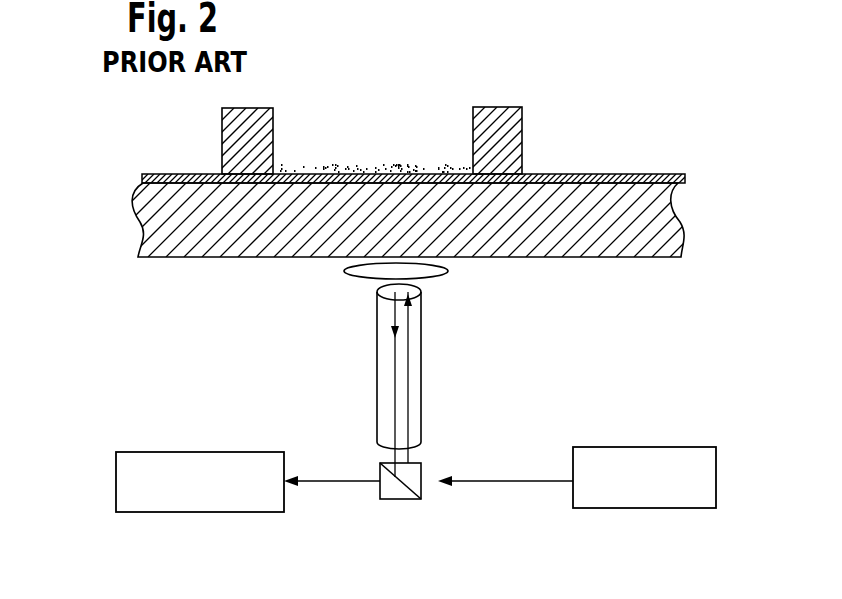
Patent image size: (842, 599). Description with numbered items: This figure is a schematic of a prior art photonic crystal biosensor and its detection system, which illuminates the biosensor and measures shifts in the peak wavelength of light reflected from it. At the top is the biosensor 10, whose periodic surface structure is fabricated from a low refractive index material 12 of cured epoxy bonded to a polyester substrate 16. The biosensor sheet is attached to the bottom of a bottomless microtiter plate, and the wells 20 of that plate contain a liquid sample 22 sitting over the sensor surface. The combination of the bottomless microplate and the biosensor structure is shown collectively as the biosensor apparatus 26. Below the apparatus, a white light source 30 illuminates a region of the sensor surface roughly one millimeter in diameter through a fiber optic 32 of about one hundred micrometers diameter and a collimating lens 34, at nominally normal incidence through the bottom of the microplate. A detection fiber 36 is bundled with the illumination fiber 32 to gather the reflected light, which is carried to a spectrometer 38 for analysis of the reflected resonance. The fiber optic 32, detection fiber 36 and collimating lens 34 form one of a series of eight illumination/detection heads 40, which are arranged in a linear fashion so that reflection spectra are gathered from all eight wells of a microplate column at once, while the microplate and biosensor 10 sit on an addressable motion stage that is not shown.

The biosensor 10 is at (666, 151).
The low refractive index material 12 is at (685, 177).
The substrate 16 is at (680, 215).
The wells 20 is at (275, 132).
The liquid sample 22 is at (400, 165).
The biosensor apparatus 26 is at (106, 161).
The white light source 30 is at (685, 447).
The fiber optic 32 is at (410, 383).
The collimating lens 34 is at (440, 278).
The detection fiber 36 is at (388, 400).
The spectrometer 38 is at (148, 452).
The illumination/detection heads 40 is at (297, 346).